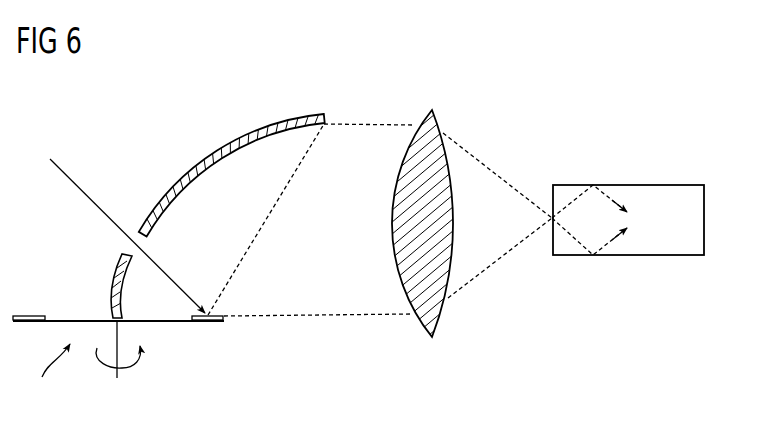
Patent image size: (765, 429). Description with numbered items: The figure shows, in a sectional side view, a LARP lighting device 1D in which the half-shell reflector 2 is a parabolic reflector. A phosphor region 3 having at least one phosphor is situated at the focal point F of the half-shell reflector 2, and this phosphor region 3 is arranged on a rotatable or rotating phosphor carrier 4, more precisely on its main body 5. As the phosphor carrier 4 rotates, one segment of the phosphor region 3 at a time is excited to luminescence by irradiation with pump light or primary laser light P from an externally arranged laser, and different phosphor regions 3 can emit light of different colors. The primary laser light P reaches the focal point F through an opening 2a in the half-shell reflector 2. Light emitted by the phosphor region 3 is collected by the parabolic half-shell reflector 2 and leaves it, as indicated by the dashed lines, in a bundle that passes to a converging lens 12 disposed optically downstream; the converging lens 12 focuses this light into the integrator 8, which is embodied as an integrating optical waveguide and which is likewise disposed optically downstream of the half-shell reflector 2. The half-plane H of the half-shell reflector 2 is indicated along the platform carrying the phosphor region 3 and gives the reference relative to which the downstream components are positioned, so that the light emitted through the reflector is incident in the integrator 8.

The lighting device 1D is at (521, 90).
The half-shell reflector 2 is at (255, 134).
The opening 2a is at (132, 249).
The primary laser light P is at (85, 190).
The focal point F is at (209, 300).
The phosphor region 3 is at (30, 317).
The phosphor carrier 4 is at (53, 374).
The main body 5 is at (172, 323).
The half-plane H is at (355, 316).
The converging lens 12 is at (443, 318).
The integrator 8 is at (643, 256).